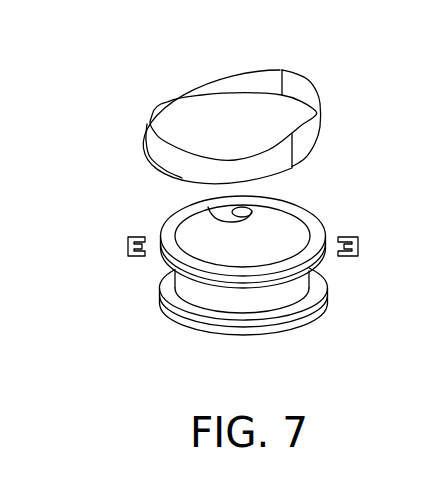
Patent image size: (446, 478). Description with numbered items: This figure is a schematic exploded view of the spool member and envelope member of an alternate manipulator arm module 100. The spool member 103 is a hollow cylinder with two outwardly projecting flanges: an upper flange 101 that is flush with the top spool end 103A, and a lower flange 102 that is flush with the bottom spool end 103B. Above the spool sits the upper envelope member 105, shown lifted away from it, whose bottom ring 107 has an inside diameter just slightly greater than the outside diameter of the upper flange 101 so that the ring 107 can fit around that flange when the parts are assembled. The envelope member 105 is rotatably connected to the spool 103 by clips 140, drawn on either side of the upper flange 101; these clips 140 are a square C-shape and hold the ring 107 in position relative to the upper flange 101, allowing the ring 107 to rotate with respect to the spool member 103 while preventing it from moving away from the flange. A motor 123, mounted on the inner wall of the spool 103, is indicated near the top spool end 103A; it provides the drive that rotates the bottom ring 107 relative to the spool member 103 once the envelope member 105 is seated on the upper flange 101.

The arm module 100 is at (114, 216).
The upper flange 101 is at (328, 261).
The lower flange 102 is at (303, 323).
The spool member 103 is at (214, 320).
The top spool end 103A is at (316, 214).
The bottom spool end 103B is at (247, 336).
The upper envelope member 105 is at (335, 86).
The bottom ring 107 is at (322, 129).
The motor 123 is at (217, 220).
The clips 140 is at (137, 256).